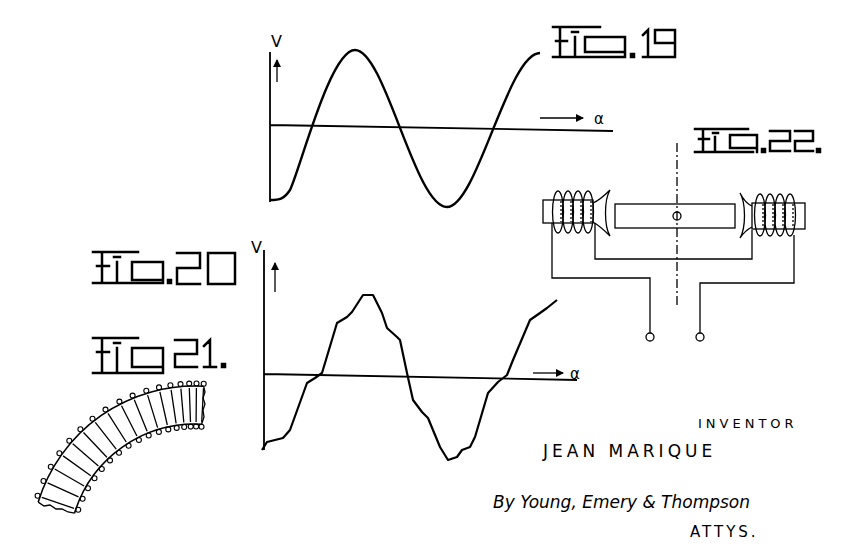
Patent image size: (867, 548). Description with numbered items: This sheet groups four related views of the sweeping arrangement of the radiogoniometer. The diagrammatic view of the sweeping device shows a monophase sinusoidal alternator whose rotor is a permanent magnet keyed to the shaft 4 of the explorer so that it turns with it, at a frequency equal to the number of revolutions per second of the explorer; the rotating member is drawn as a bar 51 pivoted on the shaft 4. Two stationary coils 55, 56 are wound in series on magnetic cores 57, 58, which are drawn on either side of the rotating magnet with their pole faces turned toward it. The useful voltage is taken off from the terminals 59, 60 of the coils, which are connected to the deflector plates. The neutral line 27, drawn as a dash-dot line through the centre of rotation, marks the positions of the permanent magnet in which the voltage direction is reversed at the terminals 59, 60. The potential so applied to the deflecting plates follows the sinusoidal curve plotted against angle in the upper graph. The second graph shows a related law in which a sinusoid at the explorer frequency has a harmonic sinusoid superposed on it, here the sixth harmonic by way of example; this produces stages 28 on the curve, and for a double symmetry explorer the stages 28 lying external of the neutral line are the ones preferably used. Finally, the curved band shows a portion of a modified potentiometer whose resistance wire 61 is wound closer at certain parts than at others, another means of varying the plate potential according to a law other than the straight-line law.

In FIG. 22, the shaft 4 is at (681, 217).
In FIG. 22, the neutral line 27 is at (677, 165).
In FIG. 20, the stage 28 is at (395, 334).
In FIG. 22, the armature bar 51 is at (640, 212).
In FIG. 22, the stationary coil 55 is at (565, 192).
In FIG. 22, the stationary coil 56 is at (781, 197).
In FIG. 22, the magnetic core 57 is at (543, 217).
In FIG. 22, the magnetic core 58 is at (797, 264).
In FIG. 22, the terminal 59 is at (645, 338).
In FIG. 22, the terminal 60 is at (705, 337).
In FIG. 21, the resistance wire 61 is at (120, 406).